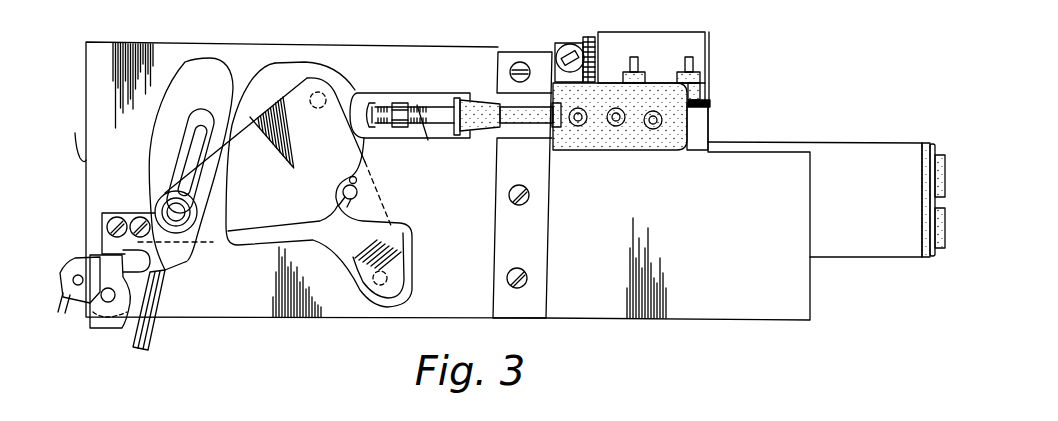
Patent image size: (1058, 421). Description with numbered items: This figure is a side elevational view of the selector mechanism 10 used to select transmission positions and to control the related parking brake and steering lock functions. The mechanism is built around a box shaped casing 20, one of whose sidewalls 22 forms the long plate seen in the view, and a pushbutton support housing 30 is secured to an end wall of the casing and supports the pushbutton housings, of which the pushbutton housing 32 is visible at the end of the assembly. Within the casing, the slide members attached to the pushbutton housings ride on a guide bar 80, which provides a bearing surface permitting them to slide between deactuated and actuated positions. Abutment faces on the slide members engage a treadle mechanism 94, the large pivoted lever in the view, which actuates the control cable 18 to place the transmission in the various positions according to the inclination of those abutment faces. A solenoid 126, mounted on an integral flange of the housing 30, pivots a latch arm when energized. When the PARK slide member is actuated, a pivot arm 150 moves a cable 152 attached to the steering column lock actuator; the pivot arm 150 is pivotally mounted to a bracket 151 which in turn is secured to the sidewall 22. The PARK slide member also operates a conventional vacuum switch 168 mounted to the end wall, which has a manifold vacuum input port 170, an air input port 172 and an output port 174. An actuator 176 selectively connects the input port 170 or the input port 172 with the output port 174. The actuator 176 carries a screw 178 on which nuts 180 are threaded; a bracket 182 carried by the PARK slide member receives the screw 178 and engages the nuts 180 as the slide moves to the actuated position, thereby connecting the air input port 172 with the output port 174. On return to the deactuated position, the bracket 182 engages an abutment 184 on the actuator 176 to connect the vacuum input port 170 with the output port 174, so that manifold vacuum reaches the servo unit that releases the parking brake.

The selector mechanism 10 is at (505, 46).
The control cable 18 is at (143, 325).
The box shaped casing 20 is at (354, 320).
The sidewall 22 is at (232, 295).
The pushbutton support housing 30 is at (726, 322).
The pushbutton housing 32 is at (872, 245).
The guide bar 80 is at (343, 190).
The treadle mechanism 94 is at (350, 164).
The solenoid 126 is at (697, 53).
The pivot arm 150 is at (95, 243).
The bracket 151 is at (113, 280).
The cable 152 is at (70, 312).
The vacuum switch 168 is at (672, 139).
The manifold vacuum input port 170 is at (578, 127).
The air input port 172 is at (653, 130).
The output port 174 is at (615, 127).
The actuator 176 is at (523, 127).
The screw 178 is at (374, 106).
The nuts 180 is at (398, 103).
The bracket 182 is at (466, 138).
The abutment 184 is at (484, 106).